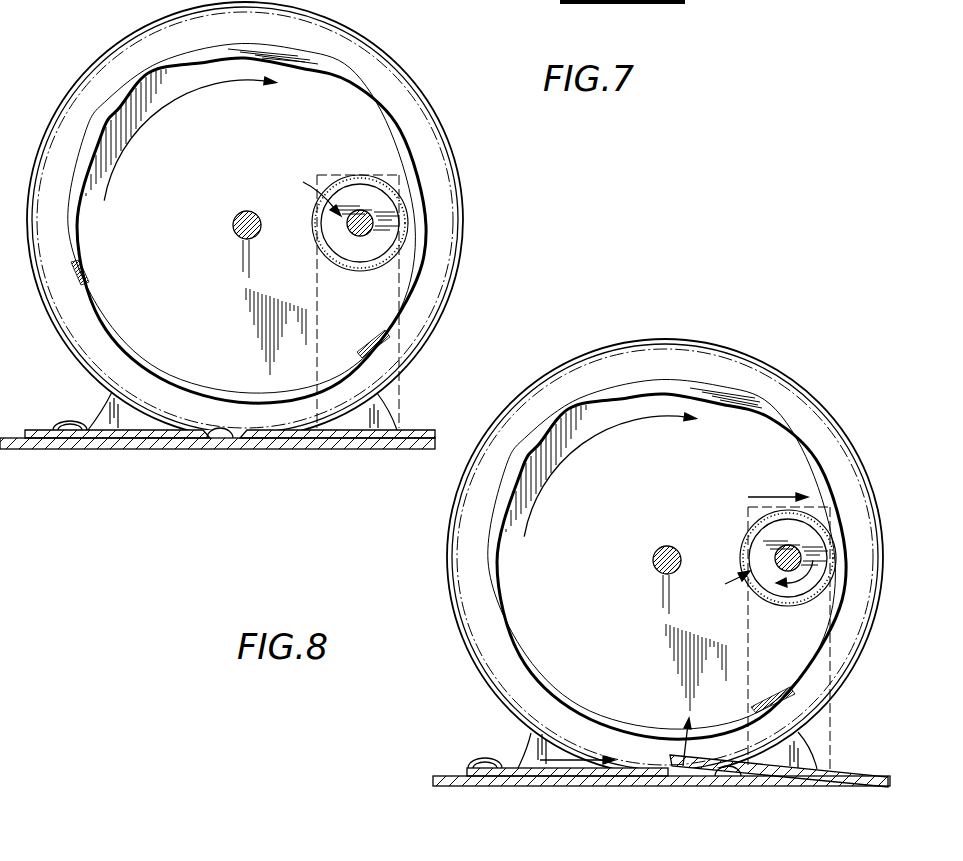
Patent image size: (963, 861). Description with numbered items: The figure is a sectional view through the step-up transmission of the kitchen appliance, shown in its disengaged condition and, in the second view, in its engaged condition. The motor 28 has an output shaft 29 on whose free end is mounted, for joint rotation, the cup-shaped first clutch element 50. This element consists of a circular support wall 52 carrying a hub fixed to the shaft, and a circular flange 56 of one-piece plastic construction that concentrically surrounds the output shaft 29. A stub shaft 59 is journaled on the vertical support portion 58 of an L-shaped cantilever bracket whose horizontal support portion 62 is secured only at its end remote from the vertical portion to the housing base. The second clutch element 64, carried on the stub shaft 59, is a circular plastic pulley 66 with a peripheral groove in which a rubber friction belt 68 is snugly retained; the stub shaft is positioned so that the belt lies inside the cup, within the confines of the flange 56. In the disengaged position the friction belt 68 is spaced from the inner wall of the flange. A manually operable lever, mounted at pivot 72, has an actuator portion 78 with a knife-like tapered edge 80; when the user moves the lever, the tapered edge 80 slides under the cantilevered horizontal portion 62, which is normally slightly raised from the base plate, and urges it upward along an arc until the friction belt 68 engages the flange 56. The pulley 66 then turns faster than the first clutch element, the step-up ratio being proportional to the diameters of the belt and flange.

In FIG. 7, the motor 28 is at (440, 152).
In FIG. 8, the motor 28 is at (665, 557).
In FIG. 7, the output shaft 29 is at (238, 222).
In FIG. 8, the output shaft 29 is at (642, 580).
In FIG. 7, the first clutch element 50 is at (298, 68).
In FIG. 8, the first clutch element 50 is at (726, 420).
In FIG. 7, the circular support wall 52 is at (170, 196).
In FIG. 8, the circular support wall 52 is at (601, 471).
In FIG. 7, the circular flange 56 is at (353, 86).
In FIG. 8, the circular flange 56 is at (667, 559).
In FIG. 7, the vertical support portion 58 is at (388, 412).
In FIG. 8, the vertical support portion 58 is at (815, 746).
In FIG. 7, the stub shaft 59 is at (353, 232).
In FIG. 8, the stub shaft 59 is at (753, 580).
In FIG. 7, the horizontal support portion 62 is at (437, 431).
In FIG. 8, the horizontal support portion 62 is at (852, 767).
In FIG. 7, the second clutch element 64 is at (310, 189).
In FIG. 8, the second clutch element 64 is at (725, 578).
In FIG. 7, the pulley 66 is at (330, 226).
In FIG. 8, the pulley 66 is at (764, 558).
In FIG. 7, the friction belt 68 is at (368, 178).
In FIG. 8, the friction belt 68 is at (772, 553).
In FIG. 7, the pivot 72 is at (67, 422).
In FIG. 8, the pivot 72 is at (495, 757).
In FIG. 7, the actuator portion 78 is at (152, 442).
In FIG. 8, the actuator portion 78 is at (666, 782).
In FIG. 7, the tapered edge 80 is at (222, 437).
In FIG. 8, the tapered edge 80 is at (735, 775).